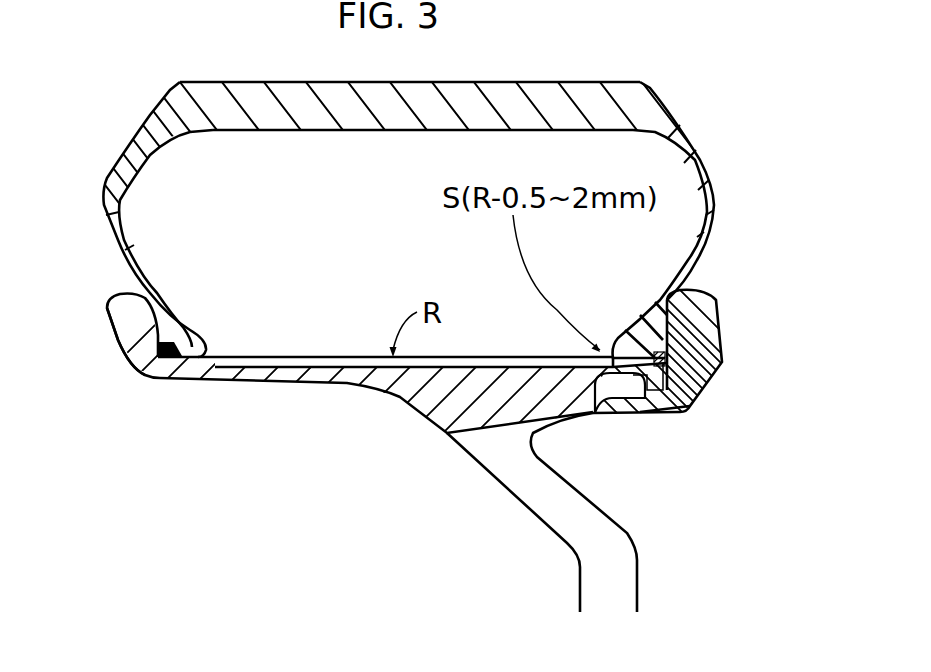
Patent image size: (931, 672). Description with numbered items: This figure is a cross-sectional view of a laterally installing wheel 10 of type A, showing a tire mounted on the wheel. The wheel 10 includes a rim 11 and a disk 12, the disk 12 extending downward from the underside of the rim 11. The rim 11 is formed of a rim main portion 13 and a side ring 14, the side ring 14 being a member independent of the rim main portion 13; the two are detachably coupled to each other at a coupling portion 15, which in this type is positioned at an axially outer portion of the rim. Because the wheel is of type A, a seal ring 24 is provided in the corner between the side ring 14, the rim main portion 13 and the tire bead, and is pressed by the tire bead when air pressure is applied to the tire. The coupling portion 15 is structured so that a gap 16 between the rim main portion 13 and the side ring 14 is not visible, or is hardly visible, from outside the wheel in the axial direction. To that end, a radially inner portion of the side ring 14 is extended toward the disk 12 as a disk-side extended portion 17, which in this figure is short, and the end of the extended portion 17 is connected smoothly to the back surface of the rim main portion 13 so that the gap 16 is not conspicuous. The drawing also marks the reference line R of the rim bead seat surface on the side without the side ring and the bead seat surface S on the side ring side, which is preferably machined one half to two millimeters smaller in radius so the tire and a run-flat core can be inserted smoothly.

The laterally installing wheel 10 is at (100, 280).
The rim 11 is at (185, 370).
The disk 12 is at (623, 573).
The rim main portion 13 is at (285, 375).
The side ring 14 is at (697, 322).
The coupling portion 15 is at (687, 408).
The gap 16 is at (597, 417).
The disk-side extended portion 17 is at (612, 410).
The seal ring 24 is at (657, 360).